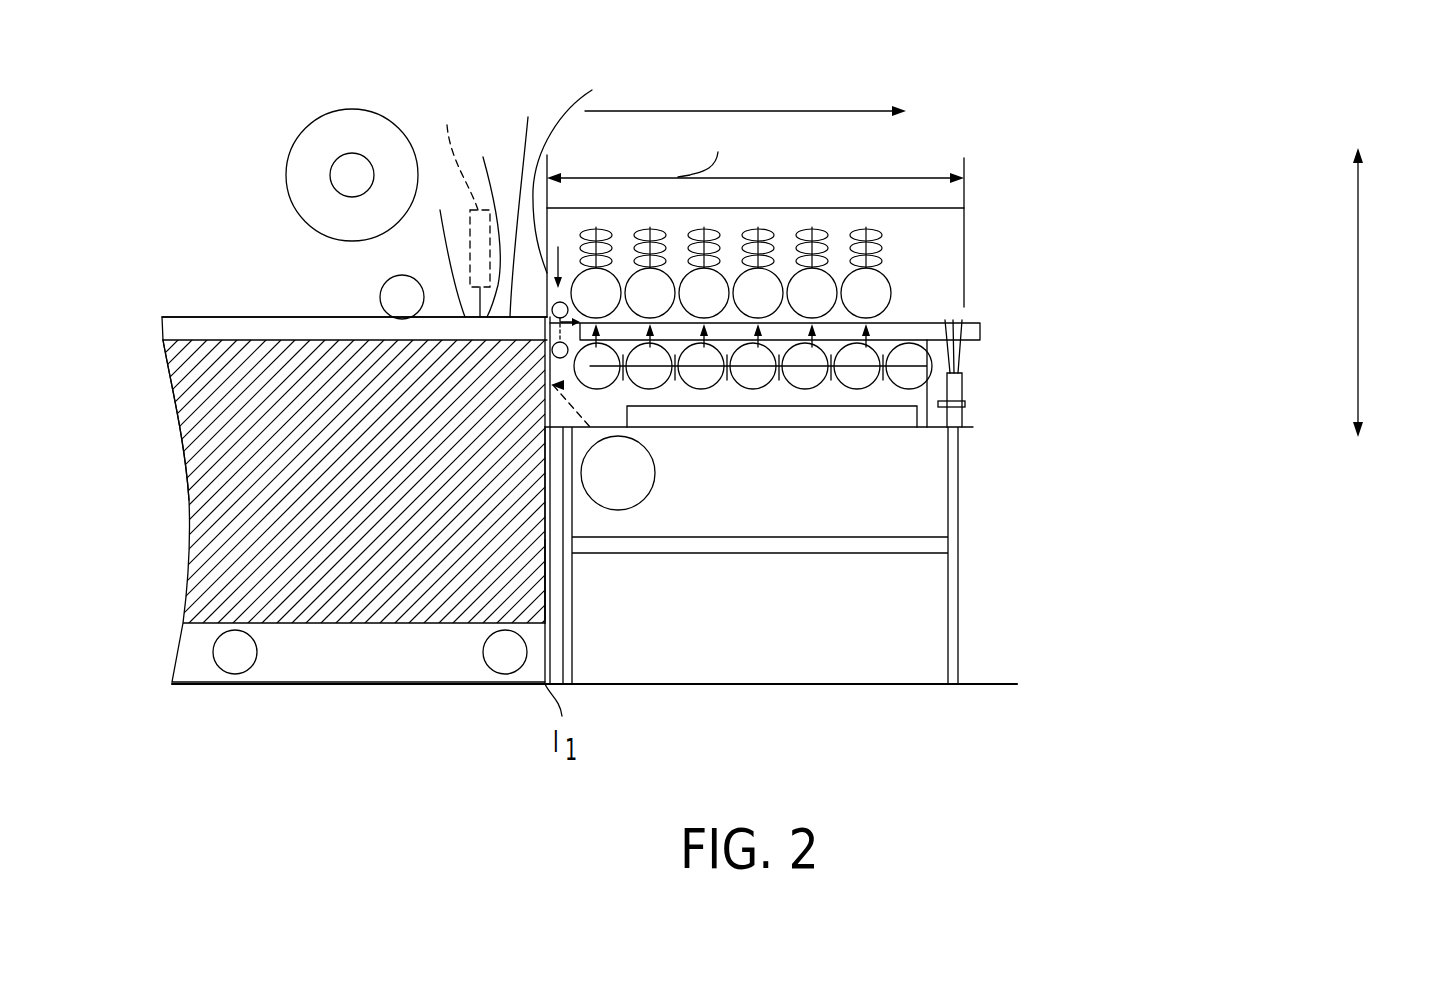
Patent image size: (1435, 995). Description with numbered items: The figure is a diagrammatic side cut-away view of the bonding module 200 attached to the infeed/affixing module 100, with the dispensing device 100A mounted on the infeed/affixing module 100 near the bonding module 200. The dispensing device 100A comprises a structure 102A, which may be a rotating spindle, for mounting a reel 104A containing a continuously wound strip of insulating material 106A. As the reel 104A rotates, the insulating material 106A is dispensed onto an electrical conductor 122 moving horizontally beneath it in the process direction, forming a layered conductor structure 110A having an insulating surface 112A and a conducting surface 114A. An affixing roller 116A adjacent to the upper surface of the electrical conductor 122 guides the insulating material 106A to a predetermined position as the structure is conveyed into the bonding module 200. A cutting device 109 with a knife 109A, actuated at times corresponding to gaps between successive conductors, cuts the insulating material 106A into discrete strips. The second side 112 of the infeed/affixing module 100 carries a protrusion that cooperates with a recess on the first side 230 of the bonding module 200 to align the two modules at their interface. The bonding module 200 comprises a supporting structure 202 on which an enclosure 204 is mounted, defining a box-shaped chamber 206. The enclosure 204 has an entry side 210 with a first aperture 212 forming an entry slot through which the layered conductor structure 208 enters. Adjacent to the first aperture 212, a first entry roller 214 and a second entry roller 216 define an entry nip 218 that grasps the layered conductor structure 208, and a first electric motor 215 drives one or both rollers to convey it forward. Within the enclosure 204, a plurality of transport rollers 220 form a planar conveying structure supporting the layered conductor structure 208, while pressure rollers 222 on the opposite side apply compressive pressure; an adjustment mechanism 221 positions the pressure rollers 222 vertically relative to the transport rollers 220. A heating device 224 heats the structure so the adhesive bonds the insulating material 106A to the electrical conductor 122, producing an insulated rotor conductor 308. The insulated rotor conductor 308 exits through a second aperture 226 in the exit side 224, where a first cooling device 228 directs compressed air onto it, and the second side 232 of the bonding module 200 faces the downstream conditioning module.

The dispensing device 100A is at (255, 128).
The structure 102A is at (350, 155).
The reel 104A is at (393, 140).
The insulating material 106A is at (383, 297).
The cutting device 109 is at (459, 202).
The knife 109A is at (483, 217).
The layered conductor structure 110A is at (530, 198).
The insulating surface 112A is at (440, 246).
The affixing roller 116A is at (380, 297).
The layered conductor structure 208 is at (428, 313).
The entry side 210 is at (571, 163).
The infeed/affixing module 100 is at (176, 589).
The conducting surface 114A is at (162, 341).
The electrical conductor 122 is at (177, 325).
The first side 230 is at (545, 508).
The second side 112 is at (553, 573).
The bonding module 200 is at (1022, 166).
The supporting structure 202 is at (958, 612).
The enclosure 204 is at (964, 208).
The chamber 206 is at (945, 227).
The heating device 224 is at (967, 262).
The second aperture 226 is at (960, 313).
The insulated rotor conductor 308 is at (978, 322).
The first cooling device 228 is at (957, 388).
The second side 232 is at (972, 417).
The adjustment mechanism 221 is at (600, 230).
The pressure rollers 222 is at (662, 300).
The transport rollers 220 is at (813, 373).
The first electric motor 215 is at (630, 477).
The first entry roller 214 is at (553, 313).
The first aperture 212 is at (553, 348).
The entry nip 218 is at (552, 378).
The second entry roller 216 is at (555, 388).